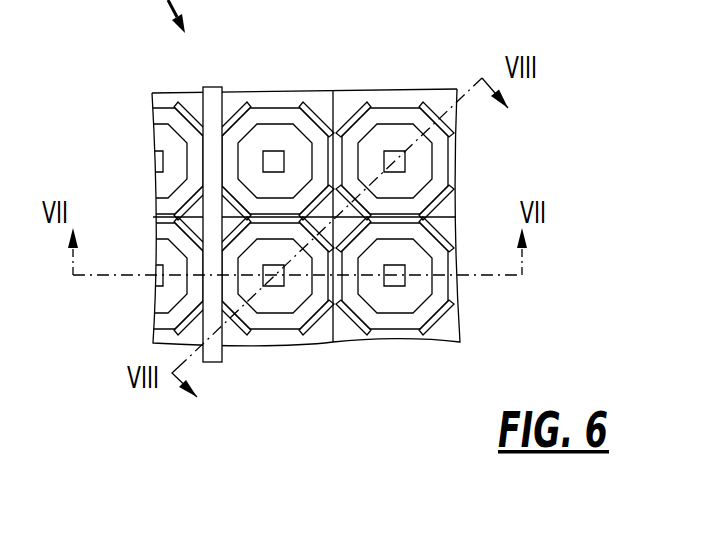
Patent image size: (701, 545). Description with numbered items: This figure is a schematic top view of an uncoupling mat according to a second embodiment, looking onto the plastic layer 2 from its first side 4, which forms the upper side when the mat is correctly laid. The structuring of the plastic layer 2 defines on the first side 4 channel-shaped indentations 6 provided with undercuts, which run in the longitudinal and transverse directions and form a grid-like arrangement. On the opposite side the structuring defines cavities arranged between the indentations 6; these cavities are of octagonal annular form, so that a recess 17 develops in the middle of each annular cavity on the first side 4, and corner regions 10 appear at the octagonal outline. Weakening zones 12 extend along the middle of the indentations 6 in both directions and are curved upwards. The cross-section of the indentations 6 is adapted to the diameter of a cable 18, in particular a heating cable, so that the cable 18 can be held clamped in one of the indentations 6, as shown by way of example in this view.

The plastic layer 2 is at (319, 92).
The first side 4 is at (403, 86).
The indentation 6 is at (234, 206).
The corner region 10 is at (360, 213).
The weakening zone 12 is at (250, 108).
The recess 17 is at (417, 282).
The cable 18 is at (180, 279).